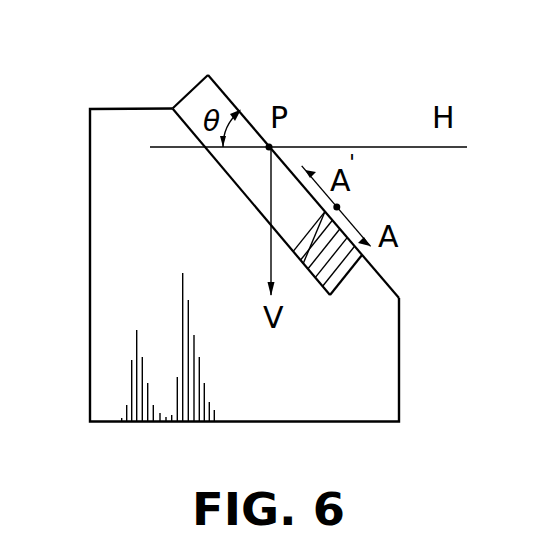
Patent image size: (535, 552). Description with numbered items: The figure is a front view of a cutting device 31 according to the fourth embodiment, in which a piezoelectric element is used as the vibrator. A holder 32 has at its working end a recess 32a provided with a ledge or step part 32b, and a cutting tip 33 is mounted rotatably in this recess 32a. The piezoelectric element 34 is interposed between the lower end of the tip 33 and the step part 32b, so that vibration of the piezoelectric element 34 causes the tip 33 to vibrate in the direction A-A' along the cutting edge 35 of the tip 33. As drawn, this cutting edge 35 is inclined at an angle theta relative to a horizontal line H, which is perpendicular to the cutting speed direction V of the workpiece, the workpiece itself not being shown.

The cutting device 31 is at (158, 62).
The holder 32 is at (123, 125).
The recess 32a is at (258, 192).
The step part 32b is at (354, 263).
The cutting tip 33 is at (213, 90).
The piezoelectric element 34 is at (348, 257).
The cutting edge 35 is at (250, 118).